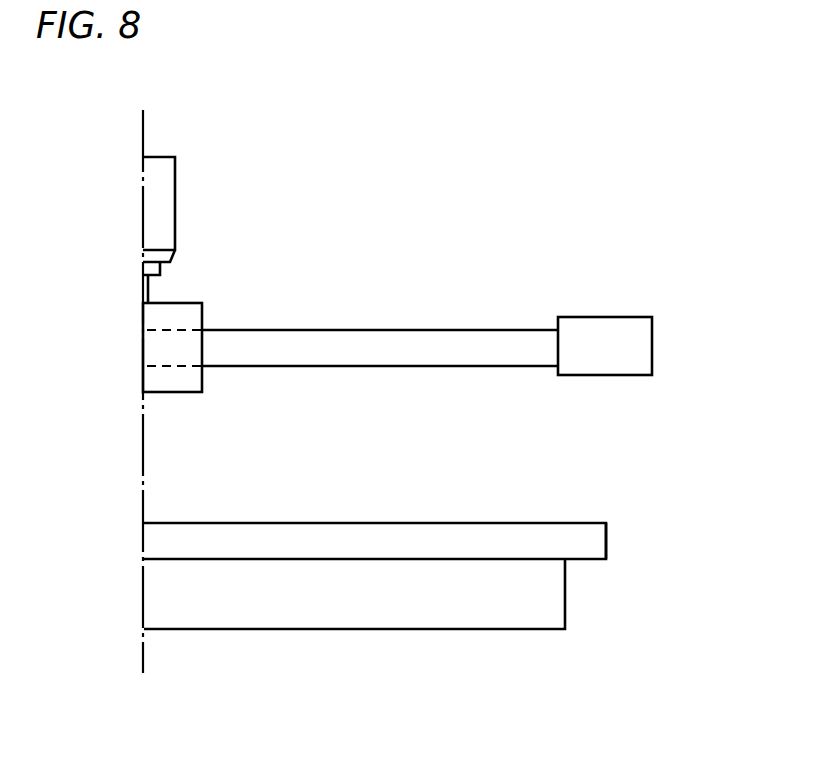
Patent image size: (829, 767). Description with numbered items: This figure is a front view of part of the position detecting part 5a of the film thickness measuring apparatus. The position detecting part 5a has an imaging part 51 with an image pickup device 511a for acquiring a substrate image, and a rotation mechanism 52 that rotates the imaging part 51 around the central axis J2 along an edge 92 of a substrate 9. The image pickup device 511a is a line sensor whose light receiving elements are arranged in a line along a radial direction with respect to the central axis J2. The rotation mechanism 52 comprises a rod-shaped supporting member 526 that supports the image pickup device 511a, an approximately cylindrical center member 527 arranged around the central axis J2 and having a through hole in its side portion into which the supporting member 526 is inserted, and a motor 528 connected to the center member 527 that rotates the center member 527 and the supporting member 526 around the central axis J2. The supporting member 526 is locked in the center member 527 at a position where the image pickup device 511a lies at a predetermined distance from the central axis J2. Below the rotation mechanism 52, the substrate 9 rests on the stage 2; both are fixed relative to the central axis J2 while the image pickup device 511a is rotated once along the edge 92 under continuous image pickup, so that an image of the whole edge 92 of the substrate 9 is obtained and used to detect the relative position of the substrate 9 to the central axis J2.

The central axis J2 is at (146, 141).
The position detecting part 5a is at (439, 195).
The rotation mechanism 52 is at (327, 217).
The motor 528 is at (160, 203).
The center member 527 is at (185, 315).
The supporting member 526 is at (327, 343).
The imaging part 51 is at (520, 265).
The image pickup device 511a is at (606, 340).
The substrate 9 is at (275, 533).
The edge 92 is at (606, 522).
The stage 2 is at (540, 593).